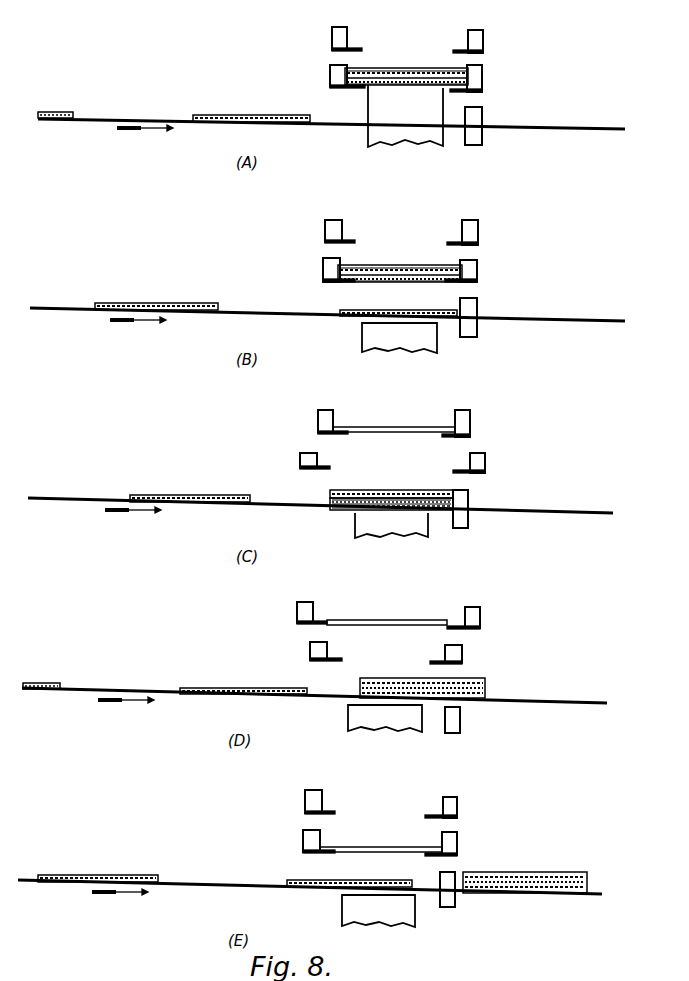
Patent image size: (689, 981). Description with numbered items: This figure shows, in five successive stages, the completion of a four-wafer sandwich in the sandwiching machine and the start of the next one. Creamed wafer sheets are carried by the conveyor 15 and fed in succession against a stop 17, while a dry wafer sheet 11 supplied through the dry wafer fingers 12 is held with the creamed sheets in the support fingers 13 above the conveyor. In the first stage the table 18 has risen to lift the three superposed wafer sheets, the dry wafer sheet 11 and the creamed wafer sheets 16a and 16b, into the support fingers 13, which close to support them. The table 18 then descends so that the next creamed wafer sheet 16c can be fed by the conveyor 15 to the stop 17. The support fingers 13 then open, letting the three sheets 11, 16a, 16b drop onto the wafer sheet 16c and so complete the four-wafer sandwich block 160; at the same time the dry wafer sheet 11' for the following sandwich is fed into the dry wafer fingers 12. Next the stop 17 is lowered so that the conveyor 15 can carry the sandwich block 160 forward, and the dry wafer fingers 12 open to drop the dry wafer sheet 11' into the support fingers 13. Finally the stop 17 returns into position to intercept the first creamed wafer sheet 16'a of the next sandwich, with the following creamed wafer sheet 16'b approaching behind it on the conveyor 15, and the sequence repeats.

In FIG. 8A, the dry wafer sheet 11 is at (406, 61).
In FIG. 8B, the dry wafer sheet 11 is at (400, 260).
In FIG. 8C, the dry wafer sheet 11 is at (391, 489).
In FIG. 8C, the dry wafer sheet 11' is at (394, 417).
In FIG. 8D, the dry wafer sheet 11' is at (387, 613).
In FIG. 8E, the dry wafer sheet 11' is at (381, 834).
In FIG. 8A, the dry wafer fingers 12 is at (332, 31).
In FIG. 8B, the dry wafer fingers 12 is at (330, 224).
In FIG. 8C, the dry wafer fingers 12 is at (318, 428).
In FIG. 8D, the dry wafer fingers 12 is at (297, 608).
In FIG. 8E, the dry wafer fingers 12 is at (307, 796).
In FIG. 8A, the support fingers 13 is at (332, 68).
In FIG. 8B, the support fingers 13 is at (325, 265).
In FIG. 8C, the support fingers 13 is at (305, 455).
In FIG. 8D, the support fingers 13 is at (312, 645).
In FIG. 8E, the support fingers 13 is at (305, 832).
In FIG. 8A, the conveyor 15 is at (155, 117).
In FIG. 8B, the conveyor 15 is at (268, 313).
In FIG. 8C, the conveyor 15 is at (91, 497).
In FIG. 8D, the conveyor 15 is at (147, 690).
In FIG. 8E, the conveyor 15 is at (238, 883).
In FIG. 8A, the creamed wafer sheet 16a is at (346, 78).
In FIG. 8B, the creamed wafer sheet 16a is at (465, 275).
In FIG. 8C, the creamed wafer sheet 16a is at (330, 495).
In FIG. 8A, the creamed wafer sheet 16b is at (362, 92).
In FIG. 8B, the creamed wafer sheet 16b is at (465, 281).
In FIG. 8C, the creamed wafer sheet 16b is at (330, 503).
In FIG. 8A, the creamed wafer sheet 16c is at (252, 114).
In FIG. 8B, the creamed wafer sheet 16c is at (368, 310).
In FIG. 8C, the creamed wafer sheet 16c is at (343, 511).
In FIG. 8A, the creamed wafer sheet 16'a is at (64, 101).
In FIG. 8B, the creamed wafer sheet 16'a is at (156, 296).
In FIG. 8C, the creamed wafer sheet 16'a is at (190, 487).
In FIG. 8D, the creamed wafer sheet 16'a is at (243, 680).
In FIG. 8E, the creamed wafer sheet 16'a is at (349, 874).
In FIG. 8D, the creamed wafer sheet 16'b is at (56, 676).
In FIG. 8E, the creamed wafer sheet 16'b is at (98, 865).
In FIG. 8A, the stop 17 is at (480, 112).
In FIG. 8B, the stop 17 is at (478, 306).
In FIG. 8C, the stop 17 is at (466, 500).
In FIG. 8D, the stop 17 is at (460, 723).
In FIG. 8E, the stop 17 is at (454, 872).
In FIG. 8A, the table 18 is at (370, 143).
In FIG. 8B, the table 18 is at (362, 343).
In FIG. 8C, the table 18 is at (366, 533).
In FIG. 8D, the table 18 is at (413, 728).
In FIG. 8E, the table 18 is at (345, 918).
In FIG. 8C, the sandwich block 160 is at (419, 489).
In FIG. 8D, the sandwich block 160 is at (410, 676).
In FIG. 8E, the sandwich block 160 is at (528, 872).